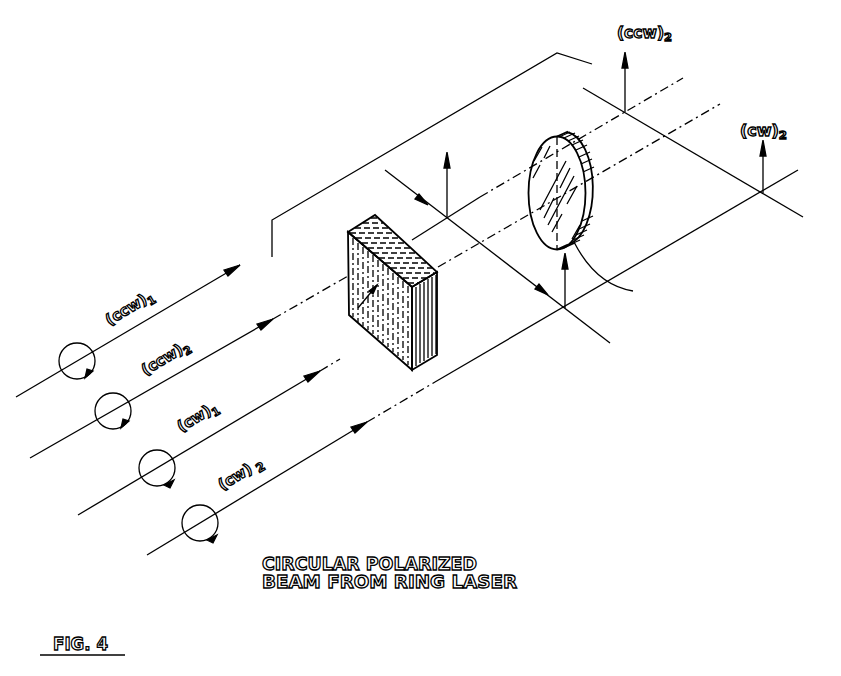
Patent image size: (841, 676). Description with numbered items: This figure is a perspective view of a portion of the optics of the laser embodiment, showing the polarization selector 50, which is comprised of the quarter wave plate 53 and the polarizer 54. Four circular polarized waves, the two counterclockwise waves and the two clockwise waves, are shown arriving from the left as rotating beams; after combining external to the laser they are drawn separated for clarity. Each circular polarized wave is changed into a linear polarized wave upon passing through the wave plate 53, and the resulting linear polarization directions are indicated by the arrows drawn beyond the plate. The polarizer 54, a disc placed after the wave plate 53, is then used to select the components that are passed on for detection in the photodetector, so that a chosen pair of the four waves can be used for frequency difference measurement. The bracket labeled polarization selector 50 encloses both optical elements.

The polarization selector 50 is at (418, 121).
The quarter wave plate 53 is at (353, 313).
The polarizer 54 is at (596, 200).